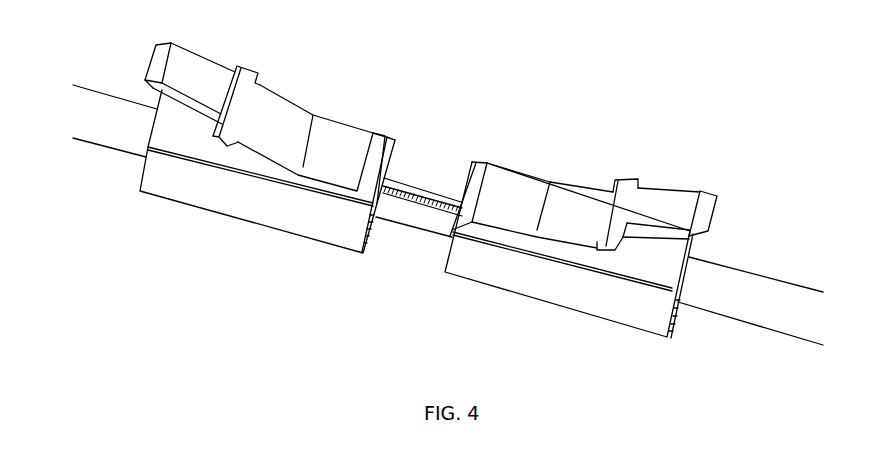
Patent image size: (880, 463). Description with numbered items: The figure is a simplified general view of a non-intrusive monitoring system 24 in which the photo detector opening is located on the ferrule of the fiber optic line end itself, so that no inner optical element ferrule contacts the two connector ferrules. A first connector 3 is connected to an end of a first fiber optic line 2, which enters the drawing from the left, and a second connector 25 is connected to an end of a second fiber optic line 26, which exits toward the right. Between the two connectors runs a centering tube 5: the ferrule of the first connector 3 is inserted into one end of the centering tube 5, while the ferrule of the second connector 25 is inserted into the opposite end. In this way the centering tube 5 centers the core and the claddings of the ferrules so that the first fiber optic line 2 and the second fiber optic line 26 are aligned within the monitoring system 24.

The first fiber optic line 2 is at (267, 161).
The first connector 3 is at (267, 175).
The centering tube 5 is at (416, 261).
The non-intrusive monitoring system 24 is at (548, 59).
The second connector 25 is at (581, 256).
The second fiber optic line 26 is at (750, 284).